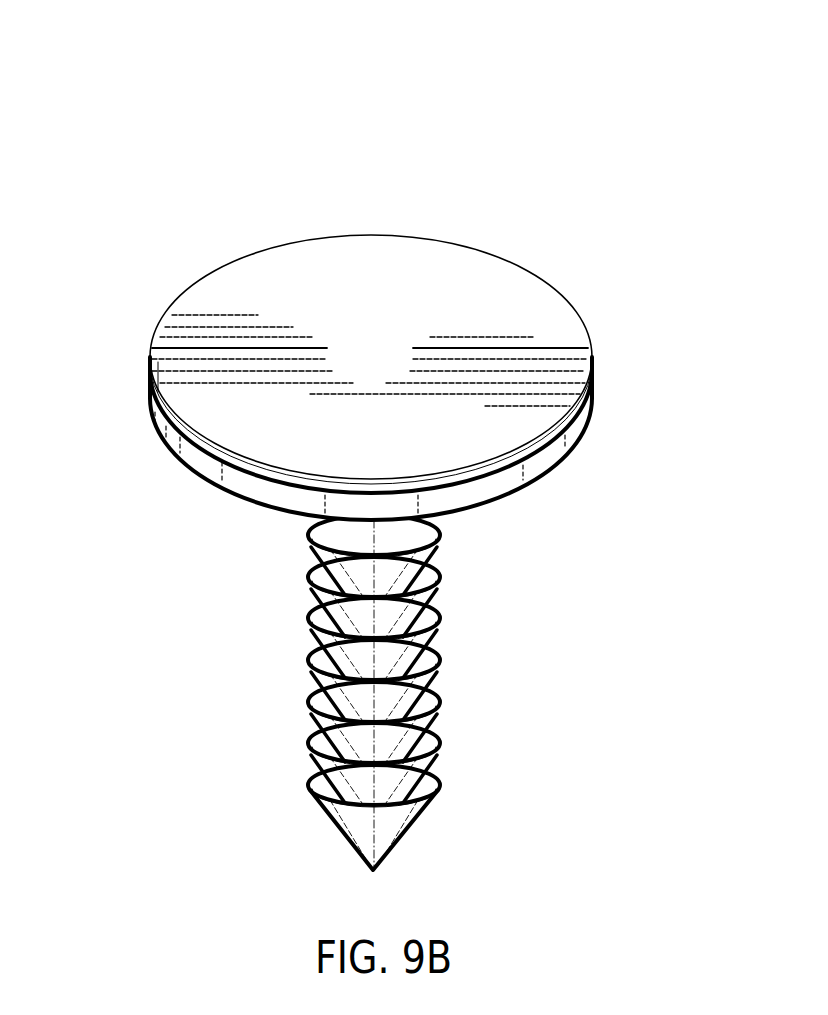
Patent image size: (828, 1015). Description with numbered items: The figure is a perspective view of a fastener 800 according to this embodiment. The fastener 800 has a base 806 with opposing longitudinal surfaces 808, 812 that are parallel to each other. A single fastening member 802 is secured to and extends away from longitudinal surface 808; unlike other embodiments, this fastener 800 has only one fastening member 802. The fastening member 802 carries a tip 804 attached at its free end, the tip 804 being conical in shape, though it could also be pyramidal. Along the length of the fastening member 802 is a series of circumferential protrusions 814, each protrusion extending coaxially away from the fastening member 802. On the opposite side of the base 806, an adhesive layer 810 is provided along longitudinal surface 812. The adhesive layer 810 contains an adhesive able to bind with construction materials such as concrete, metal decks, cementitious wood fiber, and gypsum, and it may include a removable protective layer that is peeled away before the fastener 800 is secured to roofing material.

The fastener 800 is at (371, 440).
The fastening member 802 is at (392, 692).
The tip 804 is at (340, 828).
The base 806 is at (576, 453).
The longitudinal surface 808 is at (222, 495).
The adhesive layer 810 is at (371, 376).
The longitudinal surface 812 is at (420, 288).
The circumferential protrusions 814 is at (310, 652).